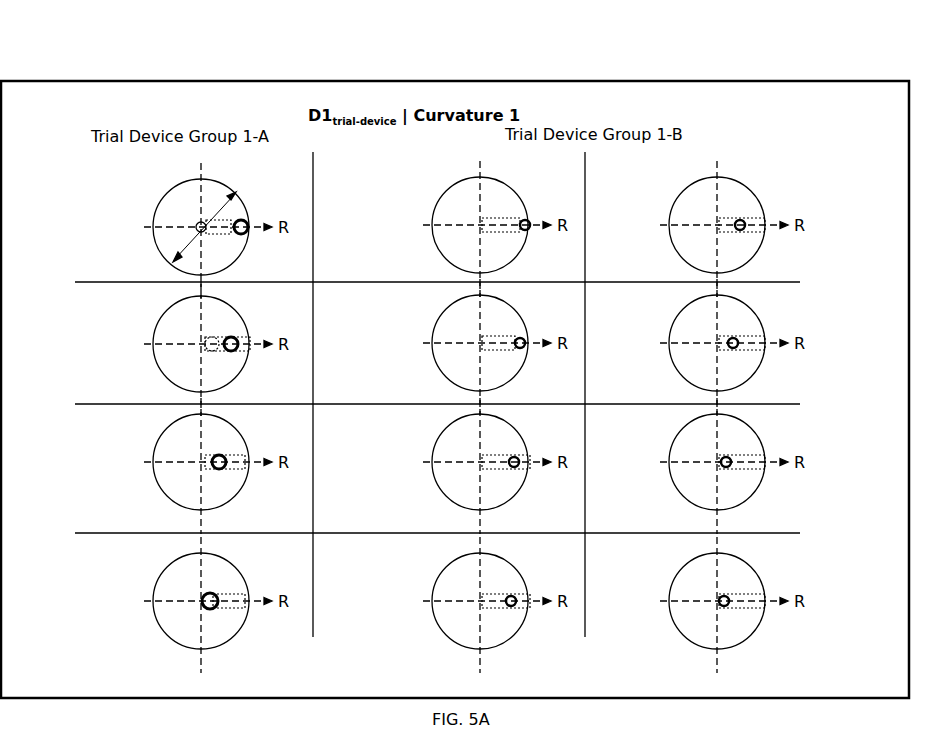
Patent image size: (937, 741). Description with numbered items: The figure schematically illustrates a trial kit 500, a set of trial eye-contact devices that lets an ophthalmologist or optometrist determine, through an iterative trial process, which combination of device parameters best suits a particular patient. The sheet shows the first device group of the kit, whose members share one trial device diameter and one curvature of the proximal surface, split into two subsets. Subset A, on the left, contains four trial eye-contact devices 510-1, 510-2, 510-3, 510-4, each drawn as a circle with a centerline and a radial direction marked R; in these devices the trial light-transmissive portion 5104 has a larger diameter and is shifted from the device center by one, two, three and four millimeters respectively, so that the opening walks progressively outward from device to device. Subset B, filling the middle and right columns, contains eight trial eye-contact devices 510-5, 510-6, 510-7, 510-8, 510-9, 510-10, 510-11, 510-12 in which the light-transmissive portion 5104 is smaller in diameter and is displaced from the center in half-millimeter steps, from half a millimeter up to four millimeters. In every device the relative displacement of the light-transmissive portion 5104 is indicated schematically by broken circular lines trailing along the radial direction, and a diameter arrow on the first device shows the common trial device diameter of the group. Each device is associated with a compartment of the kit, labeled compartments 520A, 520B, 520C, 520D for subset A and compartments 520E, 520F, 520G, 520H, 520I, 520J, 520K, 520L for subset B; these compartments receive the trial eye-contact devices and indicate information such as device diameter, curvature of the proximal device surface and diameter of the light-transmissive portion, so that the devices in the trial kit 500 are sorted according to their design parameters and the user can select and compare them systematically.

The trial kit 500 is at (188, 52).
The trial light-transmissive portion 5104 is at (209, 465).
The trial eye-contact device 510-1 is at (163, 205).
The trial eye-contact device 510-2 is at (168, 315).
The trial eye-contact device 510-3 is at (170, 435).
The trial eye-contact device 510-4 is at (168, 573).
The trial eye-contact device 510-5 is at (446, 194).
The trial eye-contact device 510-6 is at (446, 314).
The trial eye-contact device 510-7 is at (446, 434).
The trial eye-contact device 510-8 is at (446, 572).
The trial eye-contact device 510-9 is at (676, 195).
The trial eye-contact device 510-10 is at (682, 312).
The trial eye-contact device 510-11 is at (684, 434).
The trial eye-contact device 510-12 is at (685, 572).
The compartment 520A is at (292, 176).
The compartment 520B is at (296, 317).
The compartment 520C is at (298, 431).
The compartment 520D is at (302, 574).
The compartment 520E is at (568, 174).
The compartment 520F is at (569, 313).
The compartment 520G is at (576, 434).
The compartment 520H is at (579, 577).
The compartment 520I is at (816, 174).
The compartment 520J is at (822, 317).
The compartment 520K is at (829, 431).
The compartment 520L is at (829, 572).